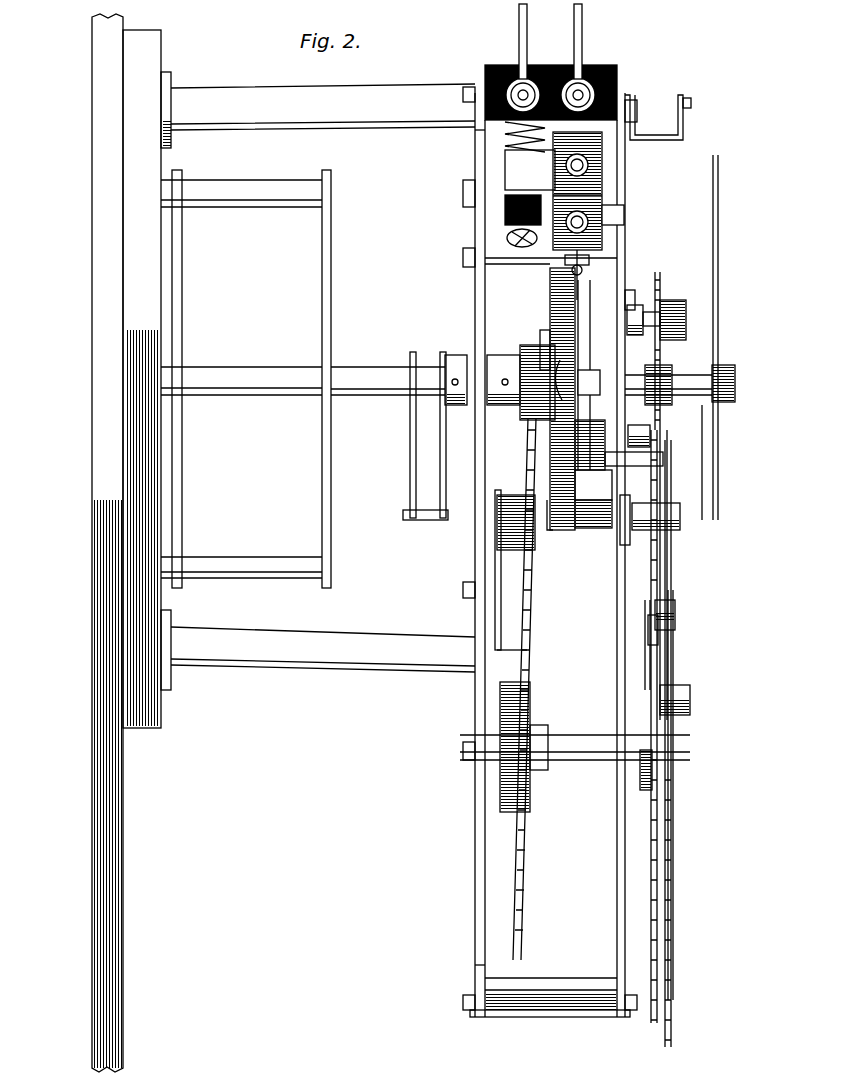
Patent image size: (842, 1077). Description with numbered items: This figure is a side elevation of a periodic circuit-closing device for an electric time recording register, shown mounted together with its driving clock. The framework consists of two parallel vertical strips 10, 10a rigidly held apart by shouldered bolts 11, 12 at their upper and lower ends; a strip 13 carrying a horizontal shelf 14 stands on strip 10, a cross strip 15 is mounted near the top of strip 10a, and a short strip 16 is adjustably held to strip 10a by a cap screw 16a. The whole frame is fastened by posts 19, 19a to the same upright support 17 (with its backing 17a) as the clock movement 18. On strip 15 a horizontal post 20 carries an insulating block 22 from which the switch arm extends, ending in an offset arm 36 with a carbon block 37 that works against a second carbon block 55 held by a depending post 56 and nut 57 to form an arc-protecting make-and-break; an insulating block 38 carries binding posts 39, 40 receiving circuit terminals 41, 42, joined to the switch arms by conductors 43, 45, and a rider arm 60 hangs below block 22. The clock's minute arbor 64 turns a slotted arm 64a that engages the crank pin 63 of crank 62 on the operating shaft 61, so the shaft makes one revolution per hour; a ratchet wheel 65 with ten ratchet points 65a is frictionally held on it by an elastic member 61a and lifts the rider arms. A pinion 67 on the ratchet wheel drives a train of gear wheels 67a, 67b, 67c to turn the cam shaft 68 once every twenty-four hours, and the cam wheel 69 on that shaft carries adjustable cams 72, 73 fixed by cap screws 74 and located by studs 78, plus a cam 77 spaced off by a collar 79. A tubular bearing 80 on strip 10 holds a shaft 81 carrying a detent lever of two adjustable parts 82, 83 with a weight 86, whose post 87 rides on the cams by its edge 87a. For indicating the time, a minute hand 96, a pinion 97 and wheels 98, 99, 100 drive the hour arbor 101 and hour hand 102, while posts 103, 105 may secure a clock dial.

The vertical strip 10 is at (624, 98).
The vertical strip 10a is at (485, 130).
The shouldered bolt 11 is at (634, 106).
The shouldered bolt 12 is at (548, 992).
The strip 13 is at (625, 536).
The horizontal shelf 14 is at (593, 485).
The strip 15 is at (490, 270).
The short strip 16 is at (495, 562).
The cap screw 16a is at (463, 591).
The upright support 17 is at (160, 50).
The wall board 17a is at (97, 56).
The clock movement 18 is at (246, 379).
The post 19 is at (280, 104).
The post 19a is at (280, 642).
The post 20 is at (604, 218).
The block of insulating material 22 is at (505, 212).
The offset arm 36 is at (506, 165).
The block of carbon 37 is at (595, 150).
The block of insulating material 38 is at (620, 70).
The binding post 39 is at (490, 92).
The binding post 40 is at (585, 78).
The terminal 41 is at (574, 20).
The terminal 42 is at (518, 15).
The electrical conductor 43 is at (505, 132).
The electric conductor 45 is at (590, 128).
The block of carbon 55 is at (602, 206).
The depending post 56 is at (590, 282).
The threaded nut 57 is at (598, 264).
The rider arm 60 is at (508, 236).
The operating shaft 61 is at (590, 372).
The elastic member 61a is at (563, 380).
The crank 62 is at (440, 436).
The crank pin 63 is at (420, 510).
The minute arbor 64 is at (368, 382).
The slotted arm 64a is at (412, 416).
The ratchet wheel 65 is at (550, 290).
The ratchet points 65a is at (548, 338).
The pinion 67 is at (530, 406).
The gear wheel 67a is at (530, 450).
The gear wheel 67b is at (515, 498).
The gear wheel 67c is at (508, 676).
The cam shaft 68 is at (565, 745).
The cam wheel 69 is at (650, 1020).
The adjustable cam 72 is at (668, 552).
The adjustable cam 73 is at (645, 654).
The cap screw 74 is at (675, 634).
The cam 77 is at (672, 974).
The stud 78 is at (655, 620).
The collar 79 is at (674, 700).
The tubular bearing 80 is at (641, 396).
The horizontal shaft 81 is at (640, 468).
The detent lever part 82 is at (578, 312).
The detent lever part 83 is at (552, 532).
The weight 86 is at (578, 424).
The post 87 is at (593, 515).
The edge 87a is at (658, 438).
The minute hand 96 is at (718, 224).
The pinion 97 is at (660, 374).
The wheel 98 is at (657, 294).
The wheel 99 is at (672, 318).
The wheel 100 is at (650, 386).
The hour arbor 101 is at (690, 396).
The hour hand 102 is at (703, 456).
The post 103 is at (682, 526).
The post 105 is at (685, 128).